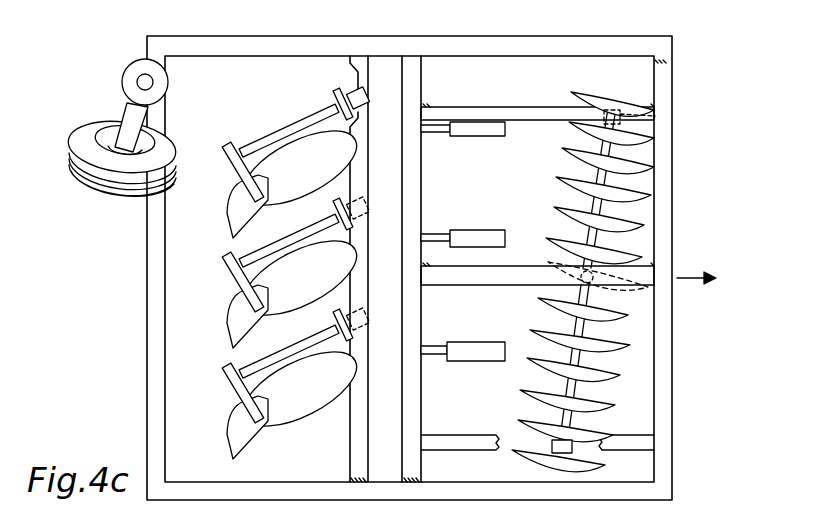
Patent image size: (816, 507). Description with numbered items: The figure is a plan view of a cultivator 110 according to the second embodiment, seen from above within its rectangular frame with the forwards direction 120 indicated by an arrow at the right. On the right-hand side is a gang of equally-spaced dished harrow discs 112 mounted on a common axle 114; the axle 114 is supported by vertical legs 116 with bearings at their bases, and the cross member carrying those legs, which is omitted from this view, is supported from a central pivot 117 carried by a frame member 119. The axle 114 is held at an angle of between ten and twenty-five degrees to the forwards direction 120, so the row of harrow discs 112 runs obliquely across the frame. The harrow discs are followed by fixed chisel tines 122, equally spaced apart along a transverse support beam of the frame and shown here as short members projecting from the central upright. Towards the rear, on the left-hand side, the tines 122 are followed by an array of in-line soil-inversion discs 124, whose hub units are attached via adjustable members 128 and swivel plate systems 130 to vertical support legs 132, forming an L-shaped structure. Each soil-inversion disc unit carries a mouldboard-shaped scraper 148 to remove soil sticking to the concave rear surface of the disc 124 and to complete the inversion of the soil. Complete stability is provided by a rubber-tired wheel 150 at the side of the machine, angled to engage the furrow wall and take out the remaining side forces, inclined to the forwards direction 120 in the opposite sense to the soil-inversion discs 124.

The cultivator 110 is at (105, 58).
The harrow discs 112 is at (537, 302).
The common axle 114 is at (593, 204).
The vertical legs 116 is at (548, 440).
The central pivot 117 is at (578, 268).
The frame member 119 is at (475, 280).
The forwards direction 120 is at (691, 275).
The chisel tines 122 is at (473, 137).
The soil-inversion discs 124 is at (299, 400).
The adjustable members 128 is at (281, 135).
The swivel plate systems 130 is at (316, 324).
The vertical support legs 132 is at (352, 96).
The mouldboard-shaped scraper 148 is at (219, 436).
The rubber-tired wheels 150 is at (123, 188).